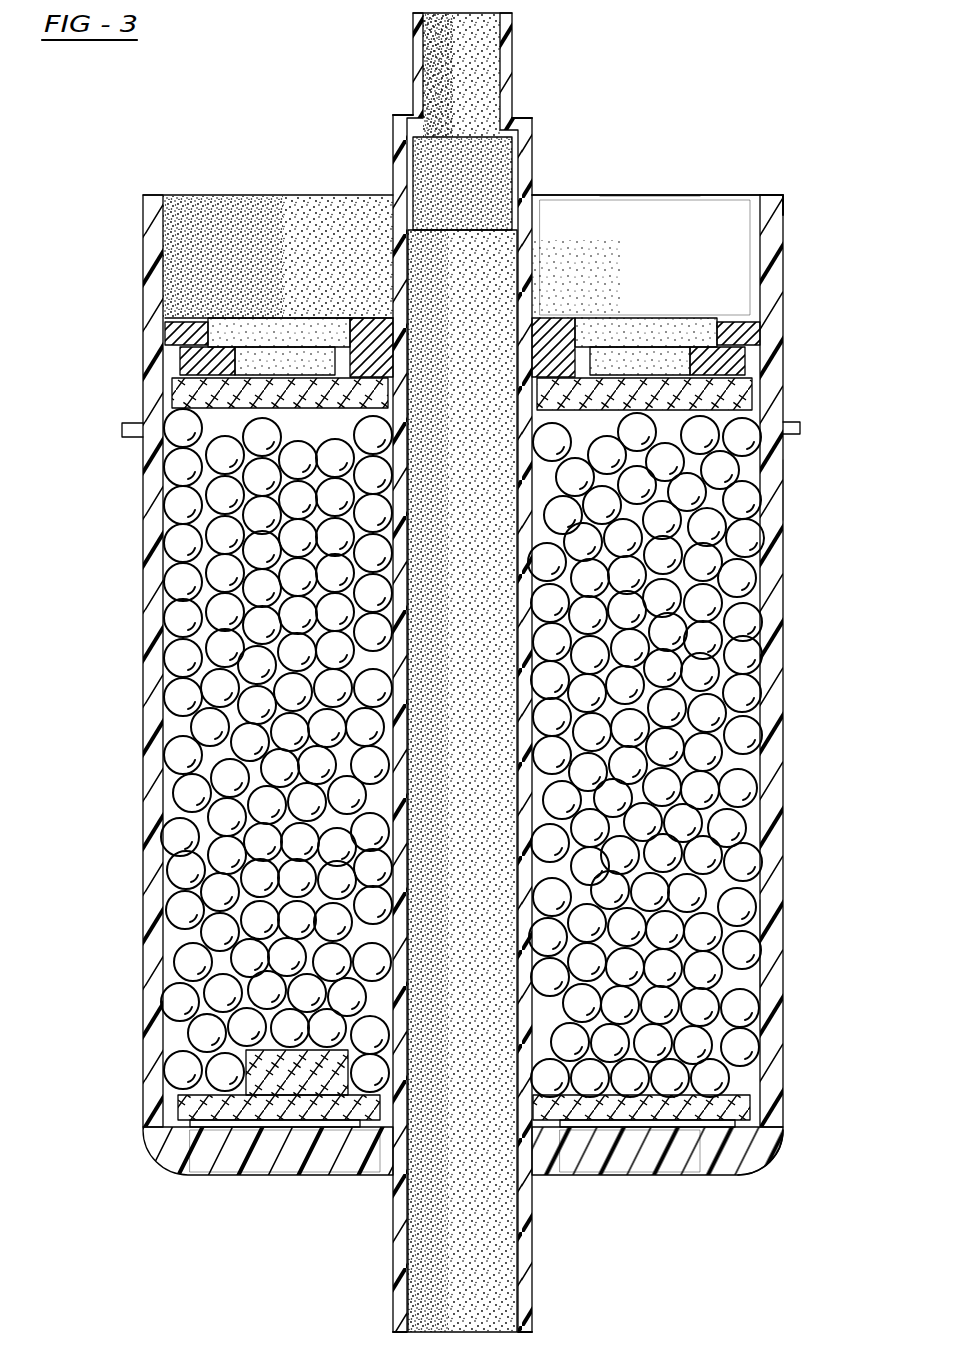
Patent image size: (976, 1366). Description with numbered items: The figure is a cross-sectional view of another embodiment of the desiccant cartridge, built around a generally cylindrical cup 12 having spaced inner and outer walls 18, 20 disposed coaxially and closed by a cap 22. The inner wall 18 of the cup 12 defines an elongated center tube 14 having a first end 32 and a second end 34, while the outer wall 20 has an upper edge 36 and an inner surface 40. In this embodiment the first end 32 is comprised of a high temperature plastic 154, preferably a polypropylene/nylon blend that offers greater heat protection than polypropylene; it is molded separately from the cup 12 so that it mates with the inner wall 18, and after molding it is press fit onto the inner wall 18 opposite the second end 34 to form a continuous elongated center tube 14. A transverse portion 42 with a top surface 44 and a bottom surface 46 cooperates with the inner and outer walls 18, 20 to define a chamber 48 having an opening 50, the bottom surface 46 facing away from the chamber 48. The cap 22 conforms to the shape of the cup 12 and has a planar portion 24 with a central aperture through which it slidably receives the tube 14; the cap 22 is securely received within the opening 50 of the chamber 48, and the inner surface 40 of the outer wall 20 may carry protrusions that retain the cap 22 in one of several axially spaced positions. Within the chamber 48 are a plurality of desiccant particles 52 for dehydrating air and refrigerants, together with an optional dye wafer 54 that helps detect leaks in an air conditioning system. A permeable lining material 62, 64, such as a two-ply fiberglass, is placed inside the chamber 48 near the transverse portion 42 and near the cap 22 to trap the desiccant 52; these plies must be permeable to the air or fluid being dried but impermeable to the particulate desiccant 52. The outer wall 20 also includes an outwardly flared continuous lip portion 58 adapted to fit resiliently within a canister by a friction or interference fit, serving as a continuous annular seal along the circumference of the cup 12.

The cup 12 is at (798, 510).
The center tube 14 is at (488, 44).
The high temperature plastic 154 is at (504, 97).
The inner wall 18 is at (395, 462).
The outer wall 20 is at (772, 270).
The cap 22 is at (633, 306).
The planar portion 24 is at (741, 366).
The first end 32 is at (540, 152).
The second end 34 is at (395, 1271).
The upper edge 36 is at (764, 188).
The inner surface 40 is at (762, 236).
The transverse portion 42 is at (627, 1160).
The top surface 44 is at (272, 1096).
The bottom surface 46 is at (706, 1176).
The chamber 48 is at (766, 976).
The opening 50 is at (684, 184).
The desiccant particles 52 is at (745, 614).
The dye wafer 54 is at (260, 1065).
The lip portion 58 is at (121, 436).
The permeable lining material 62 is at (174, 1110).
The permeable lining material 64 is at (165, 393).